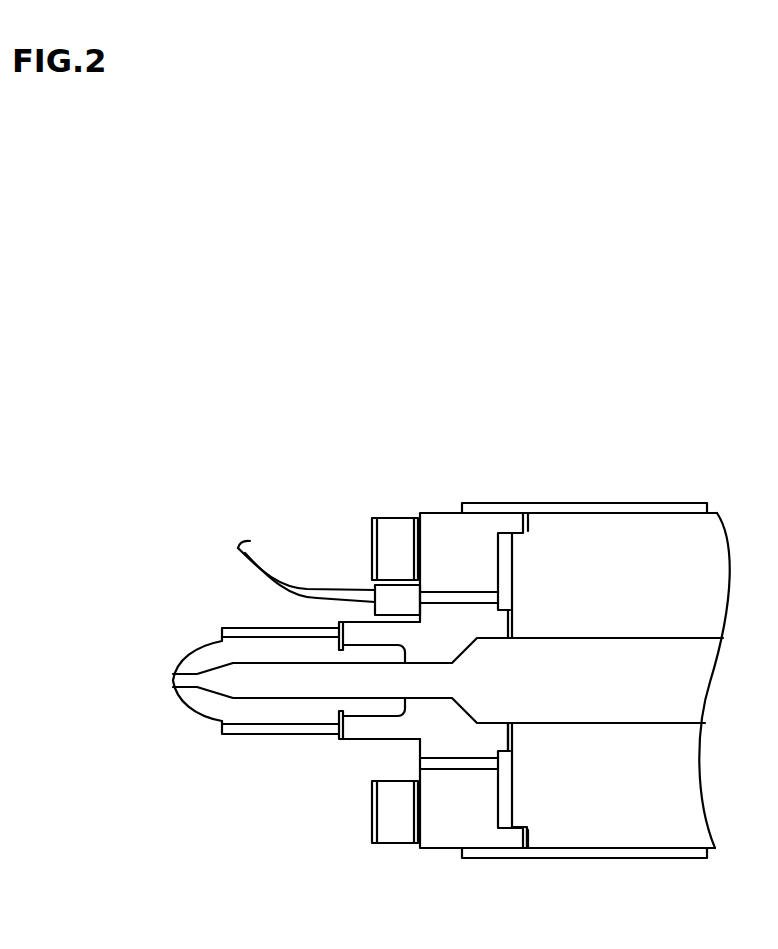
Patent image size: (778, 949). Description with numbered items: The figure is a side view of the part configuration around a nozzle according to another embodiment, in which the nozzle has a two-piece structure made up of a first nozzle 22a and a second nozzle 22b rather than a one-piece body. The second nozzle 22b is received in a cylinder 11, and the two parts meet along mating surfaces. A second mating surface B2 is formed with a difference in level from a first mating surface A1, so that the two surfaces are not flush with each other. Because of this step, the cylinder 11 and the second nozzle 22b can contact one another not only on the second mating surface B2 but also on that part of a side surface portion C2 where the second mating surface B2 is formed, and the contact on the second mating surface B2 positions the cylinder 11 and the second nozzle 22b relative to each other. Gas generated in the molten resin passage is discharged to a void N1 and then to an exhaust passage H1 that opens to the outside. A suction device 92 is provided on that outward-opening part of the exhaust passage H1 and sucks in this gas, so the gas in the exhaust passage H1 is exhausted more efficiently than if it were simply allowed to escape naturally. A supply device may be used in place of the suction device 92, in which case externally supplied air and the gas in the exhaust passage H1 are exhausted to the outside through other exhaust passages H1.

The cylinder 11 is at (648, 548).
The first nozzle 22a is at (260, 712).
The second nozzle 22b is at (393, 725).
The suction device 92 is at (387, 593).
The exhaust passage H1 is at (448, 600).
The void N1 is at (498, 793).
The side surface portion C2 is at (515, 832).
The second mating surface B2 is at (527, 832).
The first mating surface A1 is at (512, 737).